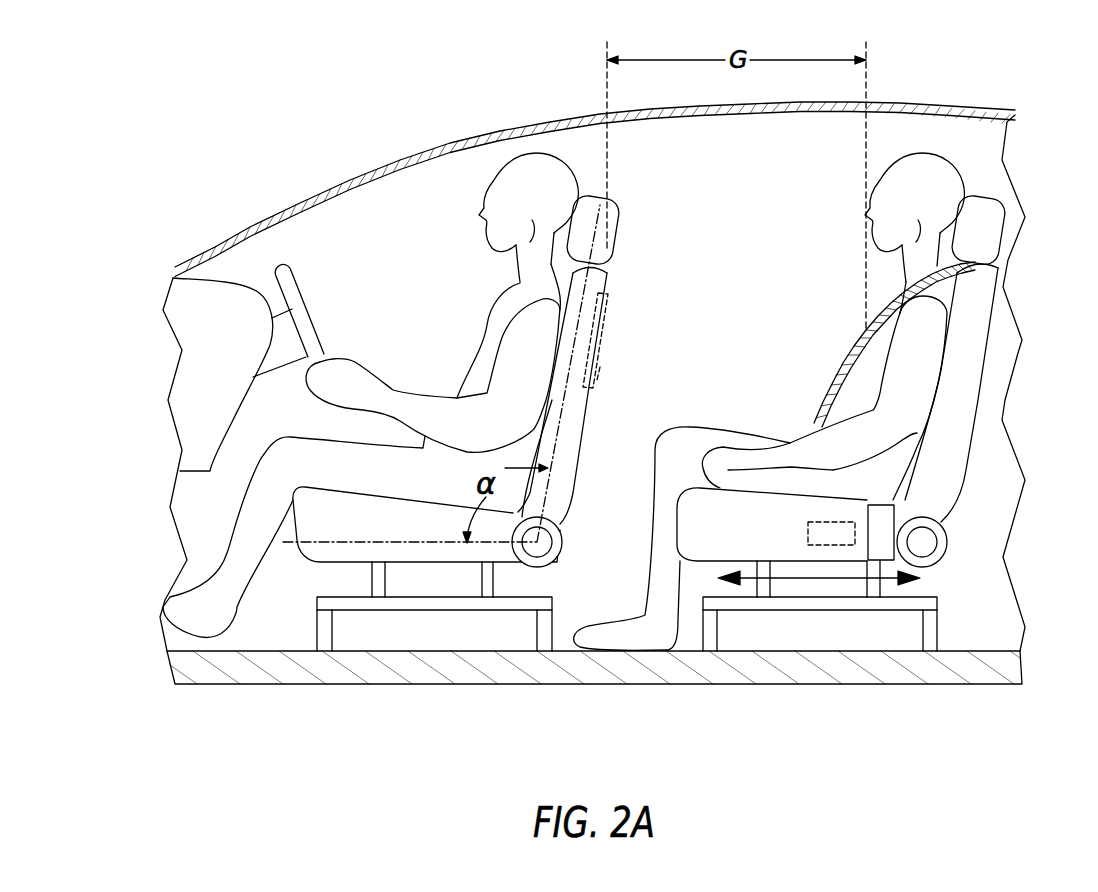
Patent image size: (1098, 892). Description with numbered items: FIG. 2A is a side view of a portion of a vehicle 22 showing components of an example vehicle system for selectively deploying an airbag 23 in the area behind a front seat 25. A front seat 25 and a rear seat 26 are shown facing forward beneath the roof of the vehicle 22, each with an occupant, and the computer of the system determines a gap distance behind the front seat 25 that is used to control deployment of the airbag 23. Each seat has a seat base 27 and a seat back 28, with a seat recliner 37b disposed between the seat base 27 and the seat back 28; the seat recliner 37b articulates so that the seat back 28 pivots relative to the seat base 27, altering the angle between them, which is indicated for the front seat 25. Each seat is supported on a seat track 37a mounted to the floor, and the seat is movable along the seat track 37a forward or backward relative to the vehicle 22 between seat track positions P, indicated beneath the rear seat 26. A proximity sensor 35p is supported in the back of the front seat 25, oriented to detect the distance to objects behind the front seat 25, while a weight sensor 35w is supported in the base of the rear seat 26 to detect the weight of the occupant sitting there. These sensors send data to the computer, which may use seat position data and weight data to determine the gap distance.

The vehicle 22 is at (345, 183).
The airbag 23 is at (600, 367).
The front seat 25 is at (593, 287).
The rear seat 26 is at (988, 283).
The seat base 27 is at (350, 522).
The seat back 28 is at (573, 427).
The proximity sensor 35p is at (607, 323).
The weight sensor 35w is at (833, 546).
The seat track 37a is at (420, 610).
The seat recliner 37b is at (563, 543).
The seat track position P is at (803, 582).